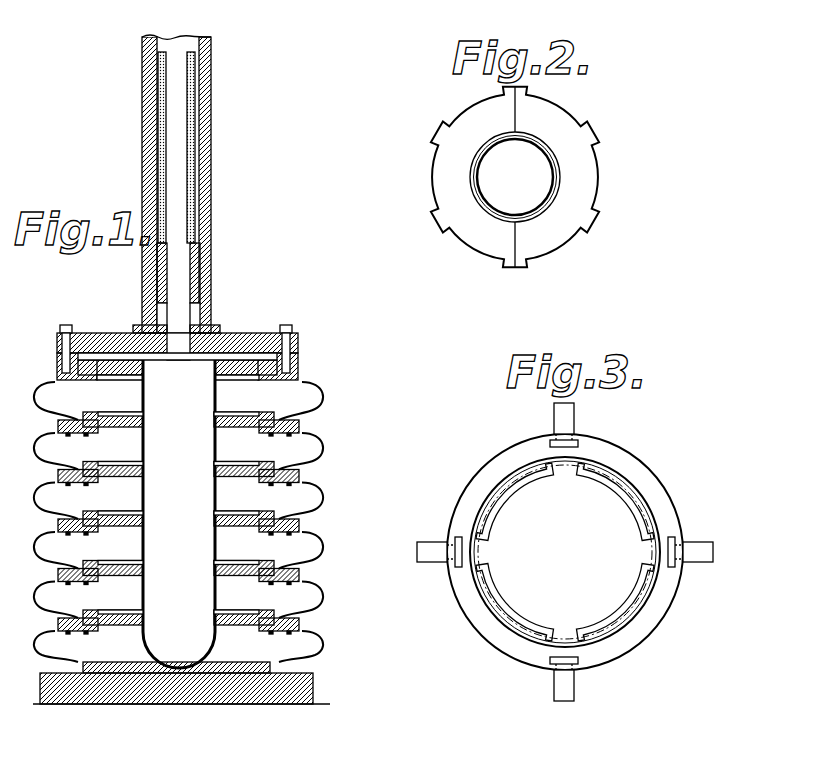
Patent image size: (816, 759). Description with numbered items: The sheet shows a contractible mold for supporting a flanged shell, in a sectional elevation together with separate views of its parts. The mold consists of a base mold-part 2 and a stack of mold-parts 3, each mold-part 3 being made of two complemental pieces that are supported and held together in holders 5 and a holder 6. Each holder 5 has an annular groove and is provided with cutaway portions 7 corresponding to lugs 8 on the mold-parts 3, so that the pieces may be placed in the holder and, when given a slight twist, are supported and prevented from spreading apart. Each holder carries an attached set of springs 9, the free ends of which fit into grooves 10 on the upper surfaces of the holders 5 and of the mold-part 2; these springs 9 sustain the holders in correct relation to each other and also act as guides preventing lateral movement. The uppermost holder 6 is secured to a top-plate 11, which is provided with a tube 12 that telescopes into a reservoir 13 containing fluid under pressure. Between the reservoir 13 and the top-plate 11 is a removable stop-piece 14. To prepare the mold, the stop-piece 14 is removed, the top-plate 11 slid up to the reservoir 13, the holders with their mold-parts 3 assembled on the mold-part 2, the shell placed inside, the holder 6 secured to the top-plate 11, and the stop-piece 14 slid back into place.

In FIG. 1, the mold-part 2 is at (246, 700).
In FIG. 1, the mold-parts 3 is at (240, 432).
In FIG. 2, the mold-parts 3 is at (515, 177).
In FIG. 1, the holders 5 is at (60, 423).
In FIG. 3, the holders 5 is at (652, 635).
In FIG. 1, the holder 6 is at (298, 371).
In FIG. 3, the cutaway portions 7 is at (560, 470).
In FIG. 2, the lugs 8 is at (528, 97).
In FIG. 1, the springs 9 is at (320, 394).
In FIG. 3, the springs 9 is at (566, 418).
In FIG. 3, the grooves 10 is at (578, 443).
In FIG. 1, the top-plate 11 is at (90, 341).
In FIG. 1, the tube 12 is at (193, 89).
In FIG. 1, the reservoir 13 is at (211, 48).
In FIG. 1, the stop-piece 14 is at (205, 313).